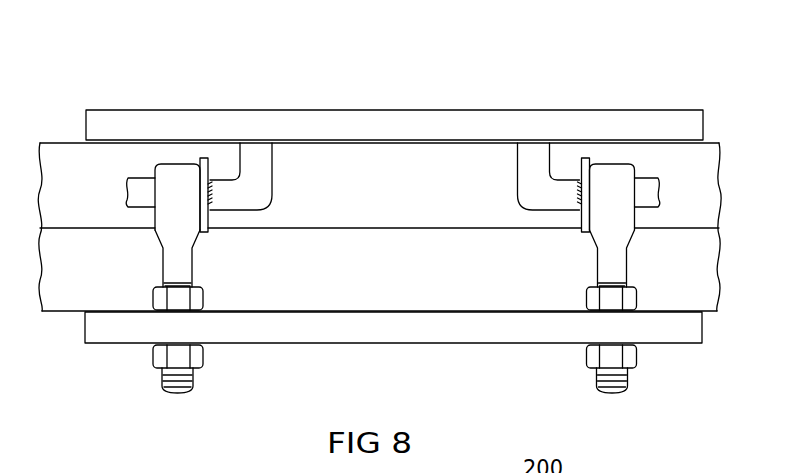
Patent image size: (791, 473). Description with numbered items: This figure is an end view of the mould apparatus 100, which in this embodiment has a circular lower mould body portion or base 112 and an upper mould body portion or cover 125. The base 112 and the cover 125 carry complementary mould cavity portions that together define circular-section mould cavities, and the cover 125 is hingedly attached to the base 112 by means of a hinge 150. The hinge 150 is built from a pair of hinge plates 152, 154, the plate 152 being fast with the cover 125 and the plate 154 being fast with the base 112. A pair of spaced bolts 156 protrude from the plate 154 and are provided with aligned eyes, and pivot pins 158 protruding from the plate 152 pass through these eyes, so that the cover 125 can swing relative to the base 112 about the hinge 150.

The mould apparatus 100 is at (587, 22).
The lower mould body portion or base 112 is at (82, 290).
The upper mould body portion or cover 125 is at (70, 128).
The hinge 150 is at (660, 170).
The hinge plate 152 is at (398, 122).
The hinge plate 154 is at (450, 332).
The bolt 156 is at (224, 279).
The pivot pin 158 is at (137, 188).